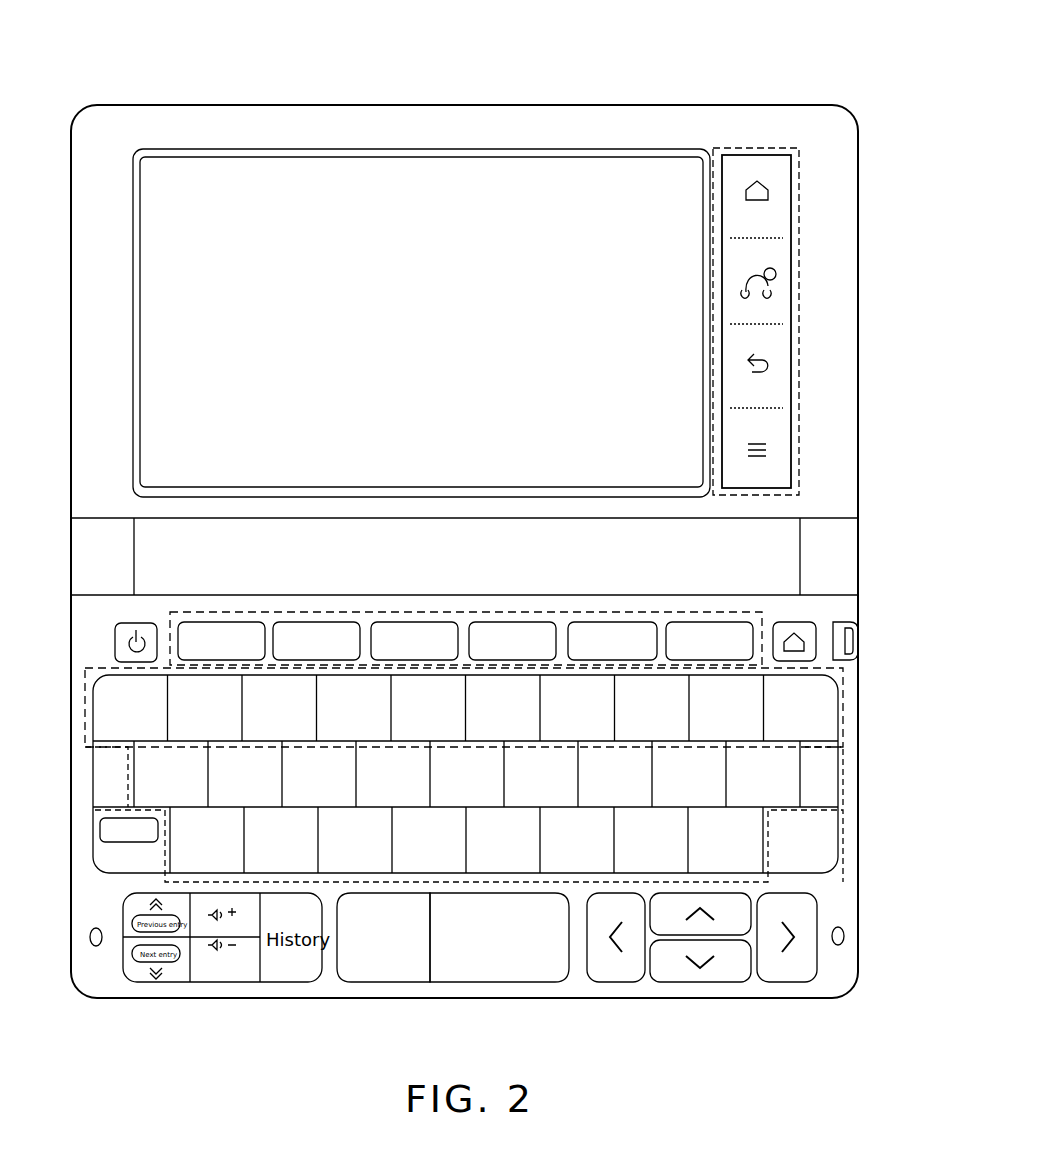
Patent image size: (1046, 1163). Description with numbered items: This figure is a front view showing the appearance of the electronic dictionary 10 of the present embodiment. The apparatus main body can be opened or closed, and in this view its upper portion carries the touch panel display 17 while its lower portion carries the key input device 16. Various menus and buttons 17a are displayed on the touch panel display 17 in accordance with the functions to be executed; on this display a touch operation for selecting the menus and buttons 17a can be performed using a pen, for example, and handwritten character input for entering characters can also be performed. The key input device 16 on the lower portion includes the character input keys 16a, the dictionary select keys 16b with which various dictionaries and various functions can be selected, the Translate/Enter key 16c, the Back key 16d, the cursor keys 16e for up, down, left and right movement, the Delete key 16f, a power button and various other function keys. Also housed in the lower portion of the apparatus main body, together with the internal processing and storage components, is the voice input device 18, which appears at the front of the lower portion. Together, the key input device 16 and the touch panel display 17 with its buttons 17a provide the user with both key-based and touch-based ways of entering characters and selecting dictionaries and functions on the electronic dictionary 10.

The electronic dictionary 10 is at (710, 82).
The key input device 16 is at (58, 603).
The character input keys 16a is at (845, 705).
The dictionary select keys 16b is at (770, 610).
The Translate/Enter key 16c is at (496, 982).
The Back key 16d is at (382, 982).
The cursor keys 16e is at (700, 982).
The Delete key 16f is at (822, 857).
The touch panel display 17 is at (451, 160).
The buttons 17a is at (800, 270).
The voice input device 18 is at (96, 946).